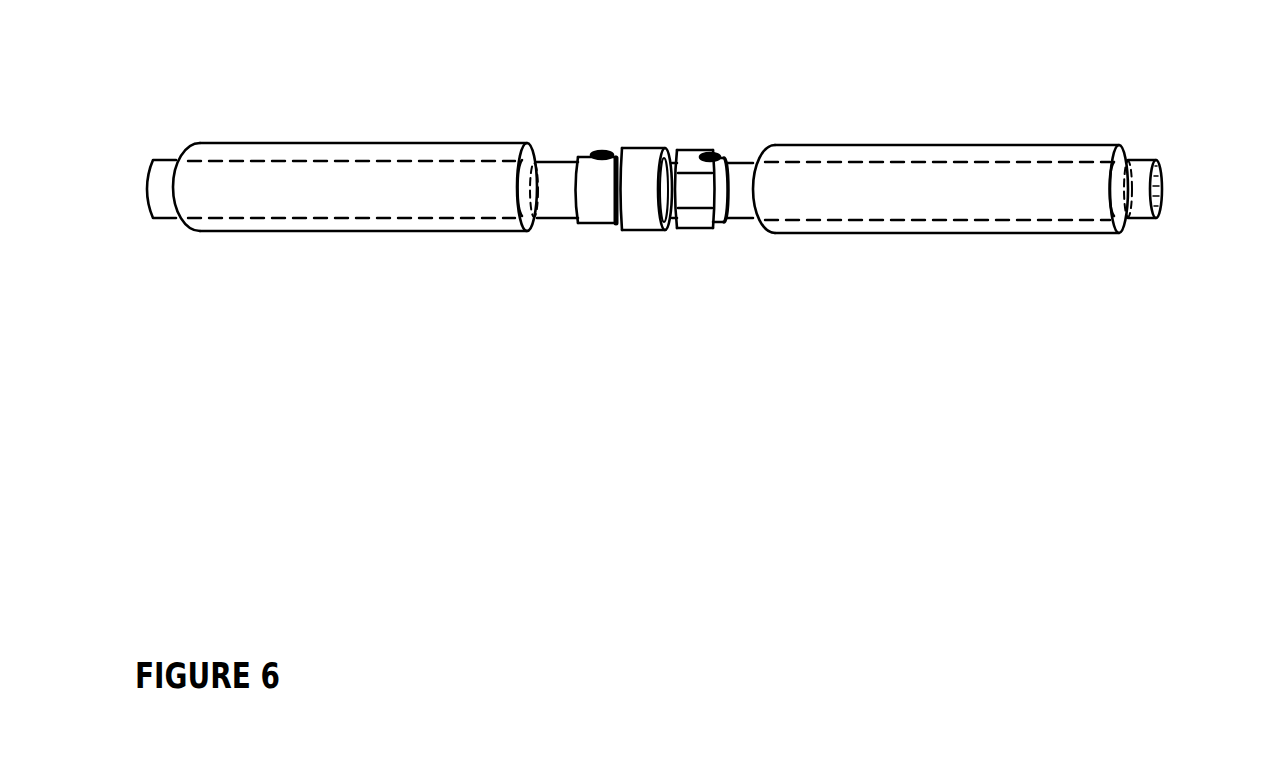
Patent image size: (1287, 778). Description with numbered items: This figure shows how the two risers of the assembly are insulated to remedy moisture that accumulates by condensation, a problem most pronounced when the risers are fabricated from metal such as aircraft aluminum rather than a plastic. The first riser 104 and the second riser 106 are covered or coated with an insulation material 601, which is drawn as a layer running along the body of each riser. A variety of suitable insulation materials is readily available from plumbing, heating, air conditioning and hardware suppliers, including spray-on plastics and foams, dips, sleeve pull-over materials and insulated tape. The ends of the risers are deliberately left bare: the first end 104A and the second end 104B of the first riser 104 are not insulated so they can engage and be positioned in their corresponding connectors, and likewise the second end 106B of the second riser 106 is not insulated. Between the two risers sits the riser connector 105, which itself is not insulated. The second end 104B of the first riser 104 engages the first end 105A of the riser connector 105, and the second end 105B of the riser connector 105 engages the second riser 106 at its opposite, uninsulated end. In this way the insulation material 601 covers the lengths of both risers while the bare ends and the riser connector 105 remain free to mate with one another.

The first riser 104 is at (305, 178).
The first end of the first riser 104A is at (163, 158).
The second end of the first riser 104B is at (540, 160).
The riser connector 105 is at (647, 148).
The first end of the riser connector 105A is at (533, 230).
The second end of the riser connector 105B is at (737, 220).
The second riser 106 is at (940, 202).
The second end of the second riser 106B is at (1140, 158).
The insulation material 601 is at (280, 233).